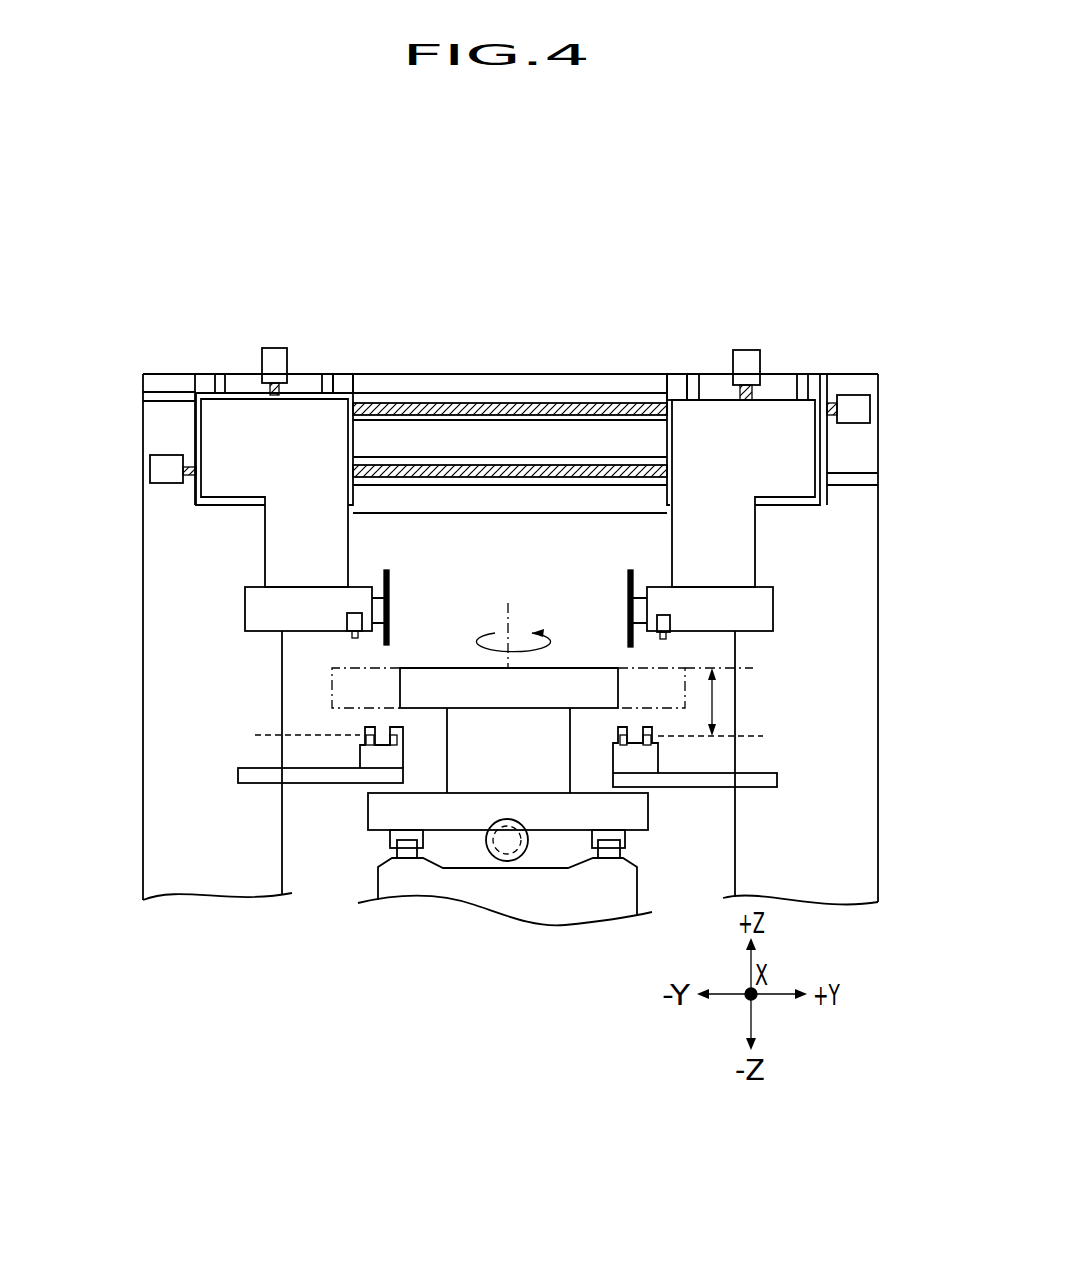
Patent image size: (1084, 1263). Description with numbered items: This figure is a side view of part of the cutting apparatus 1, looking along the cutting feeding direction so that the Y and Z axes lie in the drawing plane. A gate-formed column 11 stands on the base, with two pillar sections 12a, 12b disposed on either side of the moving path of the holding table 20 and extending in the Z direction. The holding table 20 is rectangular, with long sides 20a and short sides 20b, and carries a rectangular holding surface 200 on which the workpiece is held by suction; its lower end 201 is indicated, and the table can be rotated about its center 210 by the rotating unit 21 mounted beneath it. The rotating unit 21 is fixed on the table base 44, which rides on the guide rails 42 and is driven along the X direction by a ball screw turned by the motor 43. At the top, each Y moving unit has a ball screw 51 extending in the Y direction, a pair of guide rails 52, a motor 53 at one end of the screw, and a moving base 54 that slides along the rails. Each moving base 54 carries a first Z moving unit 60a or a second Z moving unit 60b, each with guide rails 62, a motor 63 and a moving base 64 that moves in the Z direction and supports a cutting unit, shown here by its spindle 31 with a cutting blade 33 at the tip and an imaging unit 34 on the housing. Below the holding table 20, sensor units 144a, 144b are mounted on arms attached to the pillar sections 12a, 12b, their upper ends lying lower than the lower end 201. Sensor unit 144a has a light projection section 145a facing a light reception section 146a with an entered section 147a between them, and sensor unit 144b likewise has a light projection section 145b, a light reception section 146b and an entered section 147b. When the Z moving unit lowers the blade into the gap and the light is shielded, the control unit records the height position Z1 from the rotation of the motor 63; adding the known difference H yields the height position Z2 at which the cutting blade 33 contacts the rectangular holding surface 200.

The cutting apparatus 1 is at (832, 250).
The gate-formed column 11 is at (132, 416).
The pillar section 12a is at (160, 708).
The pillar section 12b is at (865, 663).
The holding table 20 is at (449, 650).
The long side 20a is at (400, 687).
The short side 20b is at (560, 680).
The rectangular holding surface 200 is at (587, 668).
The lower end 201 is at (570, 775).
The center 210 is at (513, 612).
The rotating unit 21 is at (480, 775).
The spindle 31 is at (378, 595).
The cutting blade 33 is at (392, 570).
The imaging unit 34 is at (353, 613).
The guide rails 42 is at (410, 848).
The motor 43 is at (512, 857).
The table base 44 is at (557, 815).
The ball screw 51 is at (627, 403).
The guide rails 52 is at (397, 465).
The motor 53 is at (166, 455).
The moving base 54 is at (345, 374).
The first Z moving unit 60a is at (292, 318).
The second Z moving unit 60b is at (724, 312).
The guide rails 62 is at (220, 374).
The motor 63 is at (273, 348).
The moving base 64 is at (237, 483).
The sensor unit 144a is at (370, 768).
The sensor unit 144b is at (645, 775).
The light projection section 145a is at (388, 728).
The light projection section 145b is at (616, 728).
The light reception section 146a is at (360, 757).
The light reception section 146b is at (660, 765).
The entered section 147a is at (380, 727).
The entered section 147b is at (640, 728).
The height position Z1 is at (526, 733).
The height position Z2 is at (737, 670).
The difference H is at (712, 700).